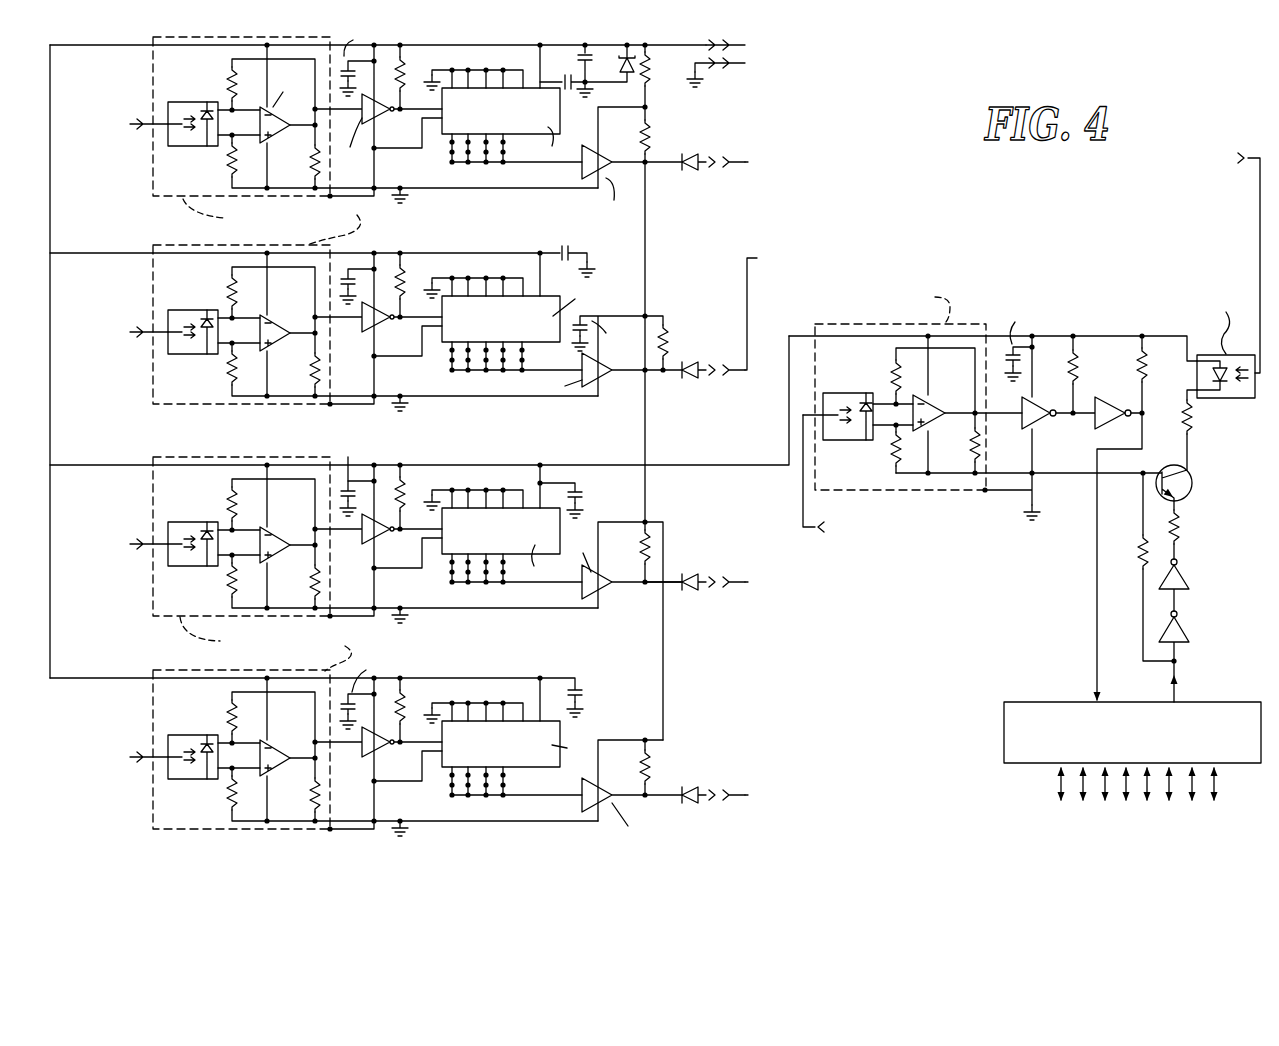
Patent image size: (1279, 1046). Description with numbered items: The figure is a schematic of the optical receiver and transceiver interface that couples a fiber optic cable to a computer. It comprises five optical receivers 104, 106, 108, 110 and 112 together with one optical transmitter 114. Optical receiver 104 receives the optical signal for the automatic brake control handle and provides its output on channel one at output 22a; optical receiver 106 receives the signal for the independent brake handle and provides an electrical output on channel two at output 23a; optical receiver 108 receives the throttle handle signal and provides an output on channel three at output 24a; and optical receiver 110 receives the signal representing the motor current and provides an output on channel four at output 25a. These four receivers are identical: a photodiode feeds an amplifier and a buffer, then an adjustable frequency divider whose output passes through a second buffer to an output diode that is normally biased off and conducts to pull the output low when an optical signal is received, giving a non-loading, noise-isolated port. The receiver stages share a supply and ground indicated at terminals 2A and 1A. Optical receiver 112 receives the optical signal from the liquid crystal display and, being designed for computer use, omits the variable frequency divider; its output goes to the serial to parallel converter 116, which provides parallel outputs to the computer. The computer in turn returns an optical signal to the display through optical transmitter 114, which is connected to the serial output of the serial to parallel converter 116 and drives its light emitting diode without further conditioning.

The optical receiver 104 is at (479, 169).
The optical receiver 106 is at (141, 421).
The optical receiver 108 is at (148, 631).
The optical receiver 110 is at (131, 711).
The optical receiver 112 is at (1003, 310).
The optical transmitter 114 is at (1219, 507).
The serial to parallel converter 116 is at (1004, 740).
The channel 1 output 22a is at (826, 161).
The channel 2 output 23a is at (829, 306).
The channel 3 output 24a is at (826, 584).
The channel 4 output 25a is at (826, 795).
The ground terminal 1A is at (728, 70).
The 5 volt supply terminal 2A is at (737, 45).